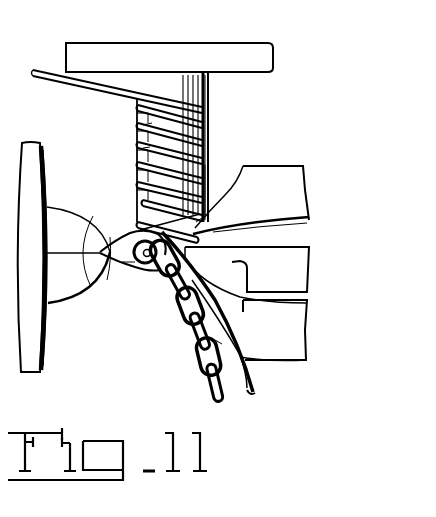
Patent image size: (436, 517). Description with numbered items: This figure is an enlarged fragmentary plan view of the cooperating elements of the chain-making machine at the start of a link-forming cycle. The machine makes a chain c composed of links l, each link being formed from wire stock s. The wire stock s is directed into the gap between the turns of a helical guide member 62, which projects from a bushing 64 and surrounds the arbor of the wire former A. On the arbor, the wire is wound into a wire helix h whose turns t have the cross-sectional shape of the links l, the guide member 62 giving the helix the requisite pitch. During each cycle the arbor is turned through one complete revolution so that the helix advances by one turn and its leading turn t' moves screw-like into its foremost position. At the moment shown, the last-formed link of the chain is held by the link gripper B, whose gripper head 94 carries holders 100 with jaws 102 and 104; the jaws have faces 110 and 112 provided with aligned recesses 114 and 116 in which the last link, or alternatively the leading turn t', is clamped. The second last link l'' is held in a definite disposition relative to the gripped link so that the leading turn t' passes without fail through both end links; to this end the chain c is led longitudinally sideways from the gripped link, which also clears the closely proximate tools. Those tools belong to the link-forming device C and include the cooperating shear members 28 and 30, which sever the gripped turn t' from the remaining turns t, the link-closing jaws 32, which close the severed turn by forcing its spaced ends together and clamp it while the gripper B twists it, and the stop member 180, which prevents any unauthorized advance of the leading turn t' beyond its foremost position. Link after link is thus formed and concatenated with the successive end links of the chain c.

The bushing 64 is at (273, 53).
The wire stock s is at (36, 70).
The helical guide member 62 is at (148, 159).
The turns t is at (116, 134).
The wire former A is at (227, 126).
The wire helix h is at (208, 137).
The link-forming device C is at (251, 167).
The shear member 28 is at (238, 207).
The link-closing jaws 32 is at (212, 210).
The leading turn t' is at (209, 222).
The shear member 30 is at (245, 276).
The stop member 180 is at (254, 325).
The gripper head 94 is at (34, 190).
The link gripper B is at (83, 274).
The jaw 104 is at (70, 228).
The jaw 102 is at (88, 287).
The holders 100 is at (43, 262).
The face 112 is at (80, 253).
The face 110 is at (104, 290).
The recess 116 is at (103, 247).
The recess 114 is at (122, 264).
The links l is at (201, 322).
The second last link l'' is at (194, 313).
The chain c is at (189, 375).